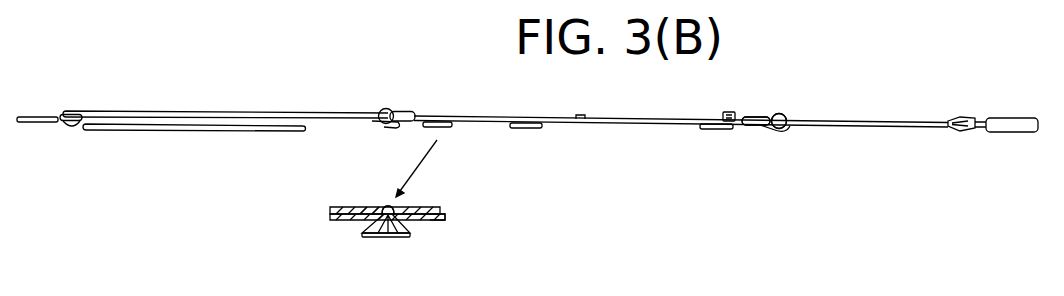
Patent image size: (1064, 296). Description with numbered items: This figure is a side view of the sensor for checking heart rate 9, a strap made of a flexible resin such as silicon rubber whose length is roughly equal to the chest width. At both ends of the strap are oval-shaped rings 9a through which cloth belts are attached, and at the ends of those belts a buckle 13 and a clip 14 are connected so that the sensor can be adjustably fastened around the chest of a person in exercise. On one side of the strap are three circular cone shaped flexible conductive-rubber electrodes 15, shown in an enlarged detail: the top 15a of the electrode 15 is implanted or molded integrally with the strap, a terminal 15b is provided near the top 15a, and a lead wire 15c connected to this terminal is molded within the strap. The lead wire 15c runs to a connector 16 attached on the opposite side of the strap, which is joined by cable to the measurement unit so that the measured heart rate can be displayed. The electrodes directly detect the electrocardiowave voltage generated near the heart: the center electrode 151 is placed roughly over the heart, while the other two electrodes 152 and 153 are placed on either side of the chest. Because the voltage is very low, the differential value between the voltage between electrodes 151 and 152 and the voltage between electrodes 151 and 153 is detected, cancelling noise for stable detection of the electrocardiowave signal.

The sensor for checking heart rate 9 is at (619, 128).
The oval-shaped ring 9a is at (762, 118).
The buckle 13 is at (998, 118).
The clip 14 is at (56, 116).
The circular cone shaped flexible conductive-rubber electrode 15 is at (398, 238).
The top of the electrode 15a is at (386, 205).
The terminal 15b is at (380, 208).
The lead wire 15c is at (431, 222).
The connector 16 is at (729, 112).
The center electrode 151 is at (525, 129).
The electrode 152 is at (450, 128).
The electrode 153 is at (713, 130).